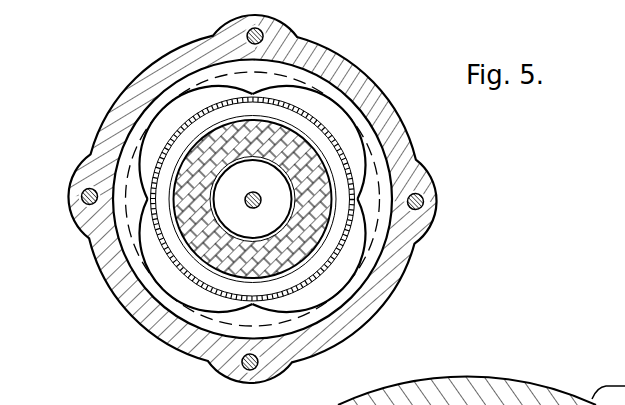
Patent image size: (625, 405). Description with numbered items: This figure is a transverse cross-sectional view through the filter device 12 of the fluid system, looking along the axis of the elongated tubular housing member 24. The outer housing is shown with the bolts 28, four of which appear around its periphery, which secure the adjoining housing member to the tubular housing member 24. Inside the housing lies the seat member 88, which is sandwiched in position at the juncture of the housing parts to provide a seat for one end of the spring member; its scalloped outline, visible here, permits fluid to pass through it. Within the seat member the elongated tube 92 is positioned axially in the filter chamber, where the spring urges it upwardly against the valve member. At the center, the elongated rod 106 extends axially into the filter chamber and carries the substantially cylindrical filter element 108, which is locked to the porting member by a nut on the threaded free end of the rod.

The filter device 12 is at (386, 87).
The tubular housing member 24 is at (339, 63).
The bolts 28 is at (267, 29).
The seat member 88 is at (381, 166).
The elongated tube 92 is at (347, 143).
The elongated rod 106 is at (254, 191).
The filter element 108 is at (121, 287).